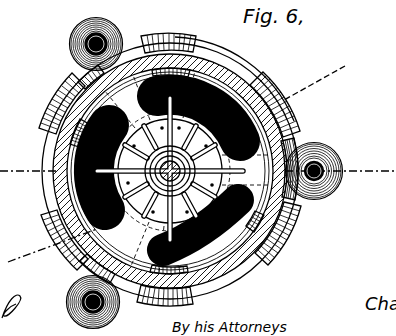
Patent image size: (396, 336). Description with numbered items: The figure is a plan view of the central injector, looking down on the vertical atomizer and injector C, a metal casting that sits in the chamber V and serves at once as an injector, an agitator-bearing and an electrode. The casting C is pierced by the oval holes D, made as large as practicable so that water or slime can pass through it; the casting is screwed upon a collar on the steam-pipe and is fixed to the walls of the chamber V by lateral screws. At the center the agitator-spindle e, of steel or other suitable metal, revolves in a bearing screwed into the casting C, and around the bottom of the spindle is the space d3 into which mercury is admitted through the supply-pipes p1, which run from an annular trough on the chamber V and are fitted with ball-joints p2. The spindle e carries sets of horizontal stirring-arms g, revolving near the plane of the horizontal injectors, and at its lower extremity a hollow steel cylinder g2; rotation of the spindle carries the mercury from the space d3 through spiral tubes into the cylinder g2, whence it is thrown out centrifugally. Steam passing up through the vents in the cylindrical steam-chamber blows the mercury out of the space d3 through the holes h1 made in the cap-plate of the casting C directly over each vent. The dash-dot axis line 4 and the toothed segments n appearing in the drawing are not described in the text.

The oval holes D is at (238, 72).
The vertical atomizer and injector C is at (77, 78).
The chamber V is at (202, 57).
The axis line 4 is at (198, 162).
The supply-pipes p1 is at (336, 148).
The ball-joints p2 is at (112, 30).
The inner toothed segments n is at (262, 121).
The horizontal stirring-arms g is at (146, 127).
The hollow steel cylinder g2 is at (170, 171).
The holes h1 is at (170, 171).
The space d3 is at (170, 169).
The agitator-spindle e is at (170, 169).